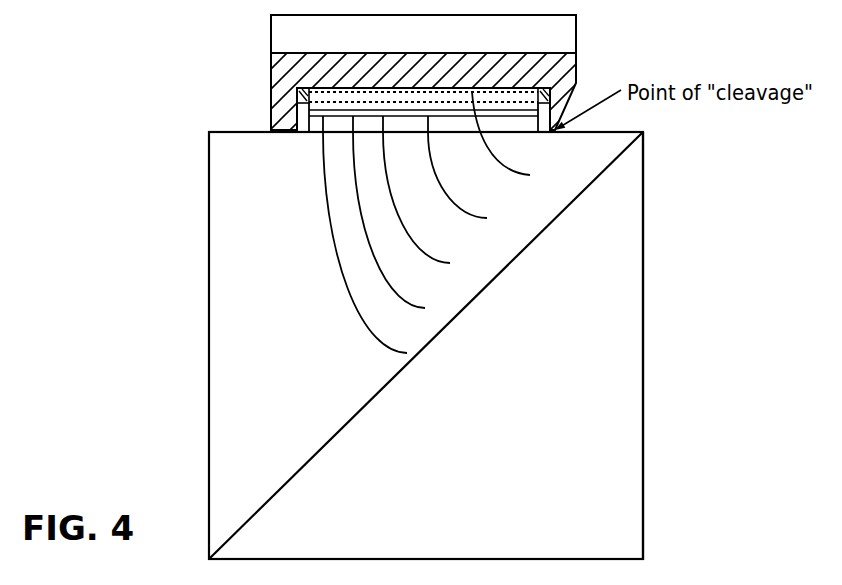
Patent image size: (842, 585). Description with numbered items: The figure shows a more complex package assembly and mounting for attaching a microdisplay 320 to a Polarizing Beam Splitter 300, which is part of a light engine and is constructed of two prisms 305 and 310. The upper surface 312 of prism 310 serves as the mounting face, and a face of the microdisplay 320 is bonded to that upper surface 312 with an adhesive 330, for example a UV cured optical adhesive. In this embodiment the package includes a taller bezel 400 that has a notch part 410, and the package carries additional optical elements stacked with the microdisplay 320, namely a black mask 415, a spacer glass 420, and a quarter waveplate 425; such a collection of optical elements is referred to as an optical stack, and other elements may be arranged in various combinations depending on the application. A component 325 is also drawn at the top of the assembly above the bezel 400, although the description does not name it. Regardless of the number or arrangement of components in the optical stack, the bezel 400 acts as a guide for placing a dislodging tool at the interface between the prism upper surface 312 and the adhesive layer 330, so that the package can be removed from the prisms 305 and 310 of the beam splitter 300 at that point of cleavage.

The Polarizing Beam Splitter 300 is at (199, 393).
The prism 305 is at (583, 530).
The prism 310 is at (268, 455).
The upper surface 312 is at (243, 133).
The microdisplay 320 is at (530, 175).
The cap / bonding layer 325 is at (555, 48).
The adhesive 330 is at (407, 353).
The bezel 400 is at (272, 83).
The notch part 410 is at (555, 141).
The black mask 415 is at (487, 218).
The spacer glass 420 is at (450, 263).
The quarter waveplate 425 is at (425, 308).